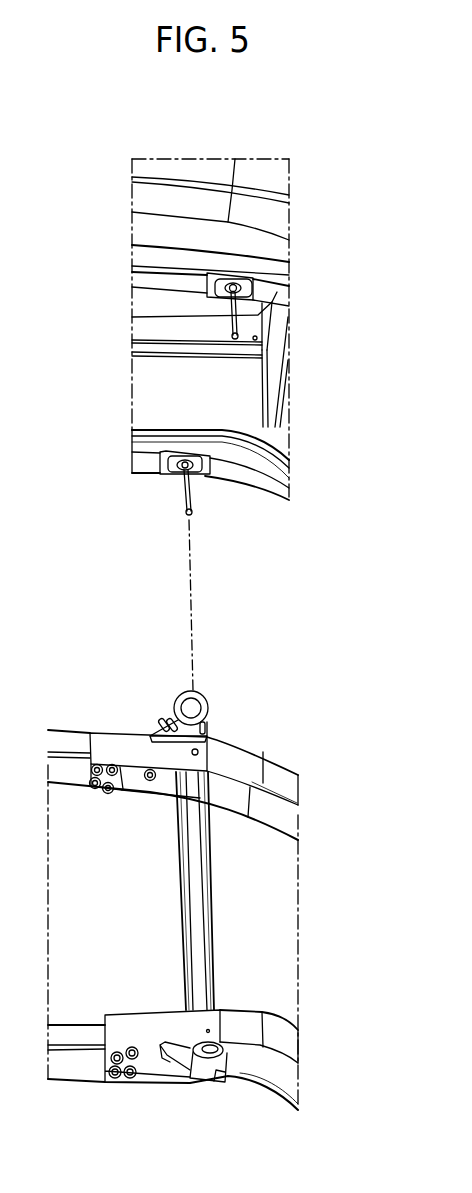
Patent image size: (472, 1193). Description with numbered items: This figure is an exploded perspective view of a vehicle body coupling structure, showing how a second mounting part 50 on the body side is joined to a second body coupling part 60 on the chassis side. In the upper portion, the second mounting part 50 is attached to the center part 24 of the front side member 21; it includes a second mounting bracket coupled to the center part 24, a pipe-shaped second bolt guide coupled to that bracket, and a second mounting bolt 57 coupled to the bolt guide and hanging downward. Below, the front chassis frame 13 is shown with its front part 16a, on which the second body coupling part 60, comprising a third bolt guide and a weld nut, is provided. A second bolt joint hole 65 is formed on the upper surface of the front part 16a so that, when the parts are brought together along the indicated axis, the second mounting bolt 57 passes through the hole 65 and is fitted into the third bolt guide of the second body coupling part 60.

The front side member 21 is at (292, 482).
The second mounting part 50 is at (181, 492).
The center part 24 is at (210, 468).
The second mounting bolt 57 is at (185, 513).
The second bolt joint hole 65 is at (192, 752).
The second body coupling part 60 is at (203, 750).
The front part 16a is at (142, 787).
The front chassis frame 13 is at (167, 1088).